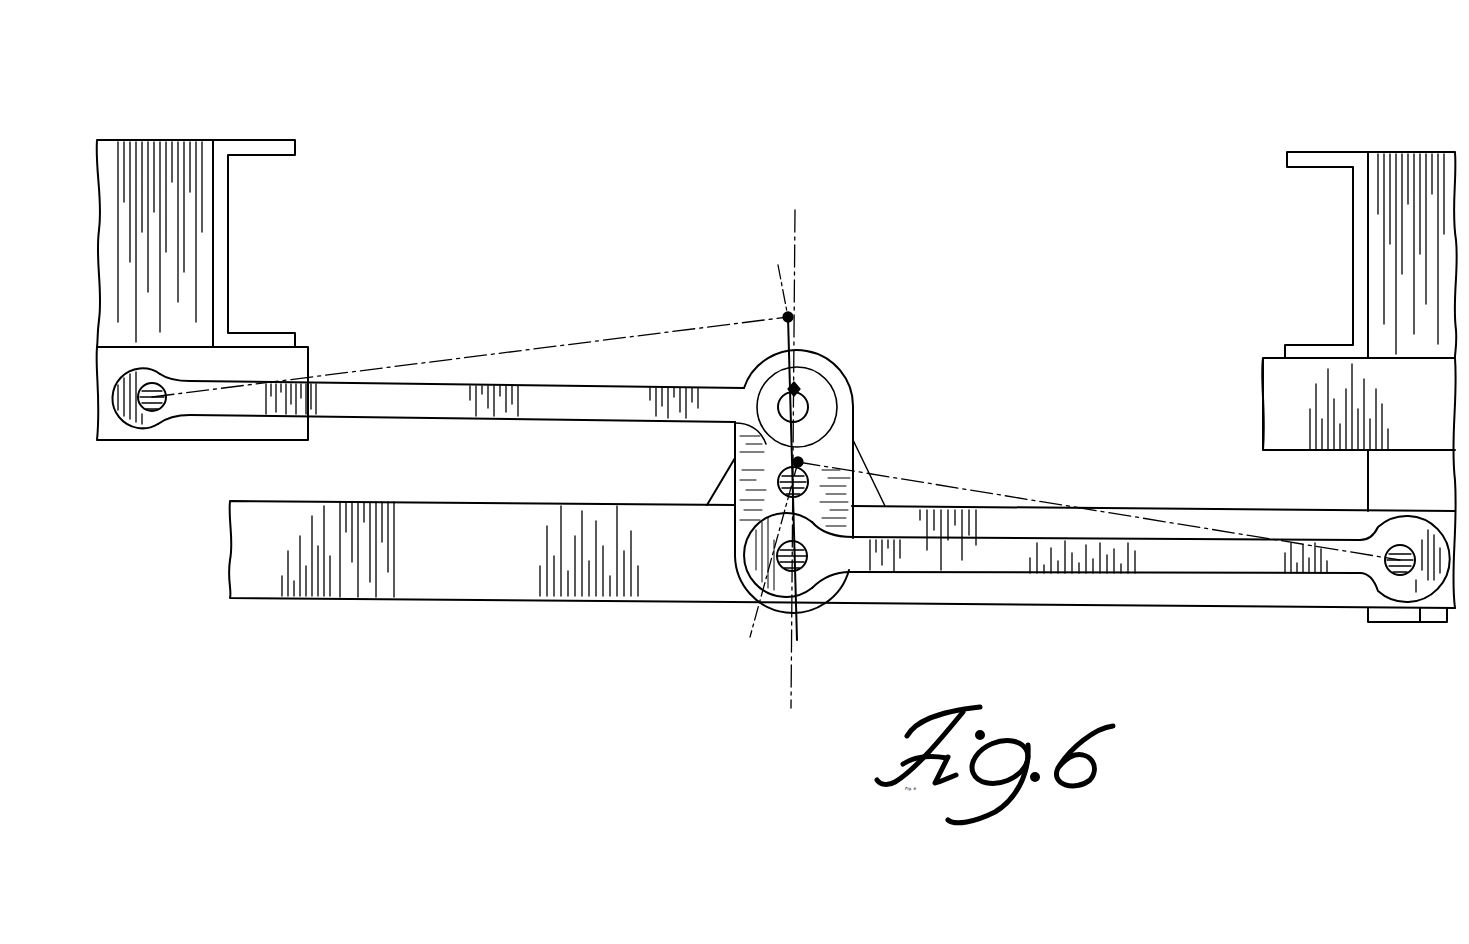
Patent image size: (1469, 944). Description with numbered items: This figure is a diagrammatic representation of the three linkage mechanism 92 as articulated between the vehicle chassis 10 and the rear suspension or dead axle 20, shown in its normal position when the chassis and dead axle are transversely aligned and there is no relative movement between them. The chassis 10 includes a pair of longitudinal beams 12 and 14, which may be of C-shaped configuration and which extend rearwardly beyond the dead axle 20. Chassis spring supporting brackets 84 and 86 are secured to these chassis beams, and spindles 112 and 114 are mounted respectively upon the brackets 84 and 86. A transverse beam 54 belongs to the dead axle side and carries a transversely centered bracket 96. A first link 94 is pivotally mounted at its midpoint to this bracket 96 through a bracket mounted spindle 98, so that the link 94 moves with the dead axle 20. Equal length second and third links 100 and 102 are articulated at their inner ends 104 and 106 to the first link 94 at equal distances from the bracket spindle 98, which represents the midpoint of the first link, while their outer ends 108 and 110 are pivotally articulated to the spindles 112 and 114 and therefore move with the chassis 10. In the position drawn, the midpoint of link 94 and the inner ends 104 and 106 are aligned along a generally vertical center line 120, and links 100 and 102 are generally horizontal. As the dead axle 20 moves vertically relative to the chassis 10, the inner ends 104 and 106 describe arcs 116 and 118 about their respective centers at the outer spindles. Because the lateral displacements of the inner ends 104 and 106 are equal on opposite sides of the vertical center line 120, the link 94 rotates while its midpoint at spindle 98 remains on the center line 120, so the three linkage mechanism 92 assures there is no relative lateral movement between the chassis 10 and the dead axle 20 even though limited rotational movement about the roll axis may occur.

The vehicle chassis 10 is at (777, 341).
The longitudinal beam 12 is at (280, 148).
The longitudinal beam 14 is at (1307, 152).
The rear suspension or dead axle 20 is at (262, 598).
The transverse beam 54 is at (387, 577).
The chassis spring supporting bracket 84 is at (1352, 151).
The chassis spring supporting bracket 86 is at (162, 150).
The three linkage mechanism 92 is at (847, 373).
The first link 94 is at (856, 426).
The transversely centered bracket 96 is at (733, 497).
The bracket mounted spindle 98 is at (778, 478).
The second link 100 is at (445, 385).
The third link 102 is at (1035, 565).
The inner end of second link 104 is at (807, 382).
The inner end of third link 106 is at (817, 610).
The outer end of second link 108 is at (156, 427).
The outer end of third link 110 is at (1403, 586).
The spindle 112 is at (149, 385).
The spindle 114 is at (1401, 550).
The arc 116 is at (790, 304).
The arc 118 is at (754, 630).
The vertical center line 120 is at (793, 233).